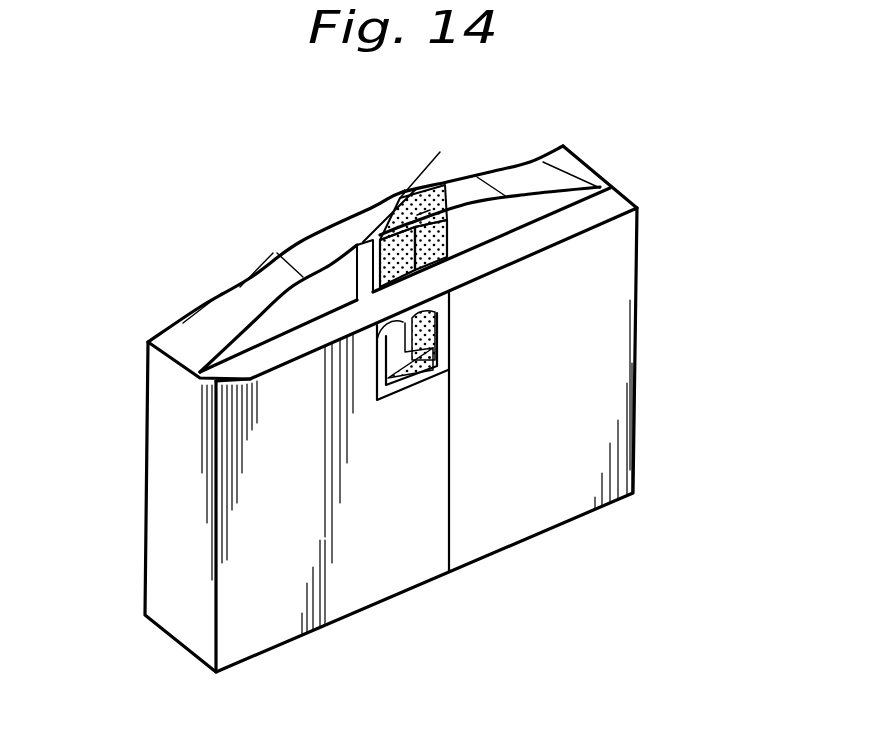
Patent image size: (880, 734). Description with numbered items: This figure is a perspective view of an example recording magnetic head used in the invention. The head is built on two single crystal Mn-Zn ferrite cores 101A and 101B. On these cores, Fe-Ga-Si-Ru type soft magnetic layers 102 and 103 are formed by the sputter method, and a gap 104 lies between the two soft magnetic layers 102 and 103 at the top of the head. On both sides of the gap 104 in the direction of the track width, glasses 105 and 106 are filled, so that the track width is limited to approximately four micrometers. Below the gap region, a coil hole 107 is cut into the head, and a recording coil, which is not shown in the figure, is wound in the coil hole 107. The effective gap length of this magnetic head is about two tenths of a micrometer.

The single crystal Mn-Zn ferrite core 101A is at (583, 178).
The single crystal Mn-Zn ferrite core 101B is at (625, 372).
The Fe-Ga-Si-Ru type soft magnetic layer 102 is at (408, 200).
The Fe-Ga-Si-Ru type soft magnetic layer 103 is at (370, 245).
The gap 104 is at (362, 240).
The glass 105 is at (393, 195).
The glass 106 is at (417, 215).
The coil hole 107 is at (376, 378).